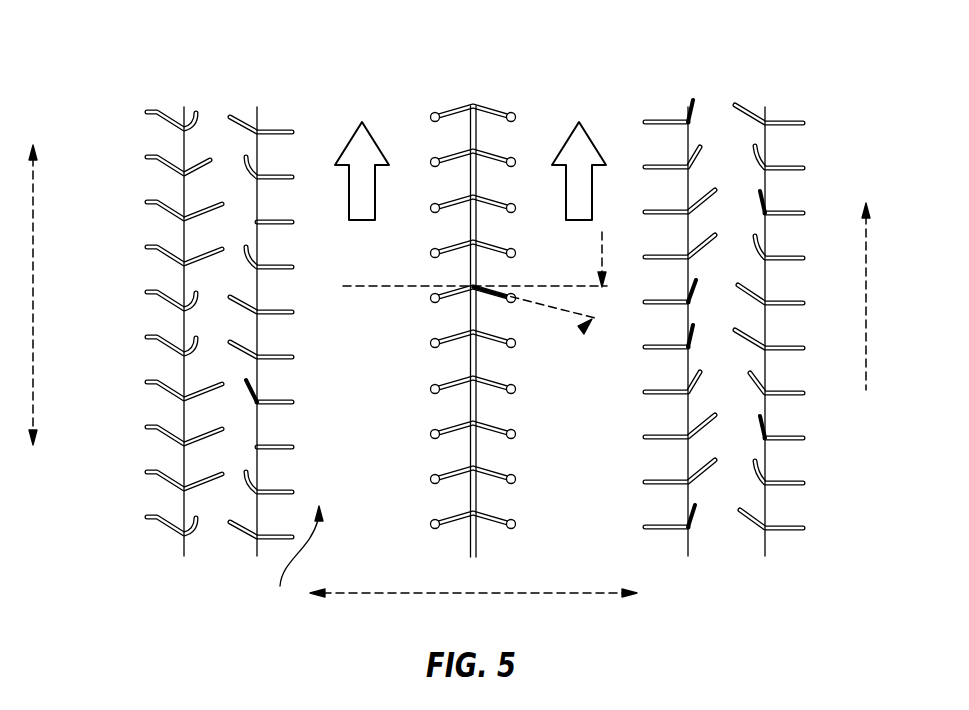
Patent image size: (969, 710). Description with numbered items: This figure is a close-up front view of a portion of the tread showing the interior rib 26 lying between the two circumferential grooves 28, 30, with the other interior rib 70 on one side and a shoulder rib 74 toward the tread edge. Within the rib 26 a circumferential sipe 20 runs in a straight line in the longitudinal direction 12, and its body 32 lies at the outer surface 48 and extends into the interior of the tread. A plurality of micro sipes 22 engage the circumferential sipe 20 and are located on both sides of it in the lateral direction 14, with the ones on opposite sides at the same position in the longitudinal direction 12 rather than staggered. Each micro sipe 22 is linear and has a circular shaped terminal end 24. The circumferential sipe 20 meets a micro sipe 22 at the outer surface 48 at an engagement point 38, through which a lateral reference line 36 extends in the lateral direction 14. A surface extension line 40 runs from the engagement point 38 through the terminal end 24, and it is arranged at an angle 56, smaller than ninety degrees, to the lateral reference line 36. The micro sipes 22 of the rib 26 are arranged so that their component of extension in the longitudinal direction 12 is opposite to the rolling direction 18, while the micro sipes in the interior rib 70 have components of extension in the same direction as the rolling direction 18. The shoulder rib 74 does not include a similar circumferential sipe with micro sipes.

The longitudinal direction 12 is at (32, 260).
The lateral direction 14 is at (534, 593).
The rolling direction 18 is at (866, 300).
The circumferential sipe 20 is at (478, 357).
The micro sipes 22 is at (437, 346).
The terminal end 24 is at (513, 303).
The rib 26 is at (550, 102).
The circumferential groove 28 is at (218, 132).
The circumferential groove 30 is at (712, 107).
The body 32 is at (478, 407).
The lateral reference line 36 is at (387, 287).
The engagement point 38 is at (473, 286).
The surface extension line 40 is at (581, 334).
The outer surface 48 is at (294, 566).
The angle 56 is at (602, 258).
The interior rib 70 is at (100, 130).
The shoulder rib 74 is at (820, 118).